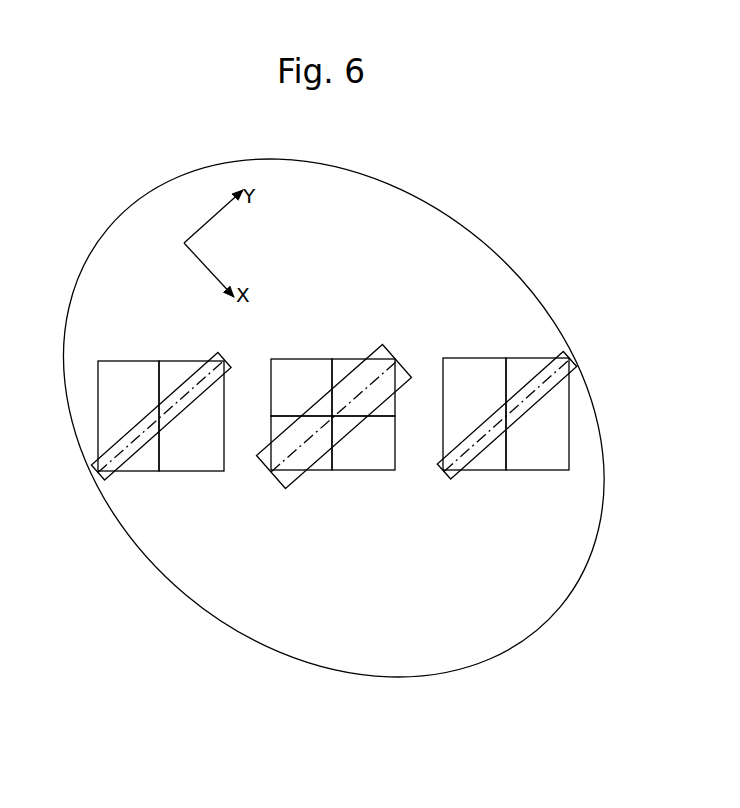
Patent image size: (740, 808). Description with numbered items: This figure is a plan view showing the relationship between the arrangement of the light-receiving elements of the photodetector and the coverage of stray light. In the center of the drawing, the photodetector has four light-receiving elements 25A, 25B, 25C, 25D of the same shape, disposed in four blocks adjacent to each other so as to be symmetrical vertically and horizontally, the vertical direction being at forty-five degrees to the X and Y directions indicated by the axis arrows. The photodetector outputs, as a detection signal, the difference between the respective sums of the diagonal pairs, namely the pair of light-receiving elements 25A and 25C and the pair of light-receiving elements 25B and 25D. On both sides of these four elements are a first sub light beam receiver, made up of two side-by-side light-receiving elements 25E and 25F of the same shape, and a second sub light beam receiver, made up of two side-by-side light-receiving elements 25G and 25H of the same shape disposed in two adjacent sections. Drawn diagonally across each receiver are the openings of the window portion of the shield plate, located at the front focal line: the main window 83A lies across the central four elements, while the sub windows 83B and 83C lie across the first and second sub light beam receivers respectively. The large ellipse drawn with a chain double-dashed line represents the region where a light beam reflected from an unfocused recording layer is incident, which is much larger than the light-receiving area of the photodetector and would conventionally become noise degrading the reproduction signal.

The light-receiving element 25A is at (297, 370).
The light-receiving element 25B is at (343, 365).
The light-receiving element 25C is at (380, 465).
The light-receiving element 25D is at (320, 472).
The light-receiving element 25E is at (125, 370).
The light-receiving element 25F is at (177, 370).
The light-receiving element 25G is at (470, 368).
The light-receiving element 25H is at (527, 368).
The main window 83A is at (353, 427).
The sub window 83B is at (175, 420).
The sub window 83C is at (488, 445).